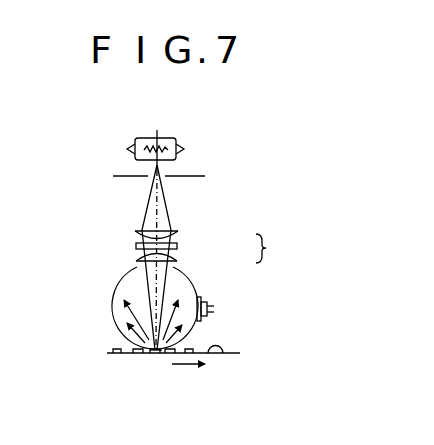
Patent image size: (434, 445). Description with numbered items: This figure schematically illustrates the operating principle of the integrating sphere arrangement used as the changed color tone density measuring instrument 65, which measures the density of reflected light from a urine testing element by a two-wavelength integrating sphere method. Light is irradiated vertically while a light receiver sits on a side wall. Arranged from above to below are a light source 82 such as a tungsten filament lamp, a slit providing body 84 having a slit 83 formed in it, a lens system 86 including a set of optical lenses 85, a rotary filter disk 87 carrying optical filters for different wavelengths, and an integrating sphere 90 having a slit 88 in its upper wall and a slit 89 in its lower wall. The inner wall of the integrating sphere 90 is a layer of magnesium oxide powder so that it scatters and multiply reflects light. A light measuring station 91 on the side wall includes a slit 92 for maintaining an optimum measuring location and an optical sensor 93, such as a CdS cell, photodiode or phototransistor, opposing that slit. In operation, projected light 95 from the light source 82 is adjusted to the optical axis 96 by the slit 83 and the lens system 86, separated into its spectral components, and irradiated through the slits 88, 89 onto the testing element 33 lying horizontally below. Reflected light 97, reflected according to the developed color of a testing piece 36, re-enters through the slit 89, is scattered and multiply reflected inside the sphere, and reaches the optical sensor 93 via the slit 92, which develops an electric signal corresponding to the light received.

The light source 82 is at (163, 147).
The changed color tone density measuring instrument 65 is at (273, 142).
The slit providing body 84 is at (192, 176).
The slit 83 is at (163, 178).
The projected light 95 is at (151, 164).
The optical axis 96 is at (162, 217).
The rotary filter disk 87 is at (137, 246).
The slit 88 is at (136, 263).
The set of optical lenses 85 is at (158, 255).
The lens system 86 is at (181, 255).
The integrating sphere 90 is at (113, 296).
The light measuring station 91 is at (211, 278).
The reflected light 97 is at (125, 312).
The optical sensor 93 is at (213, 308).
The slit 92 is at (200, 323).
The urine testing element 33 is at (240, 357).
The testing piece 36 is at (221, 355).
The slit 89 is at (155, 356).